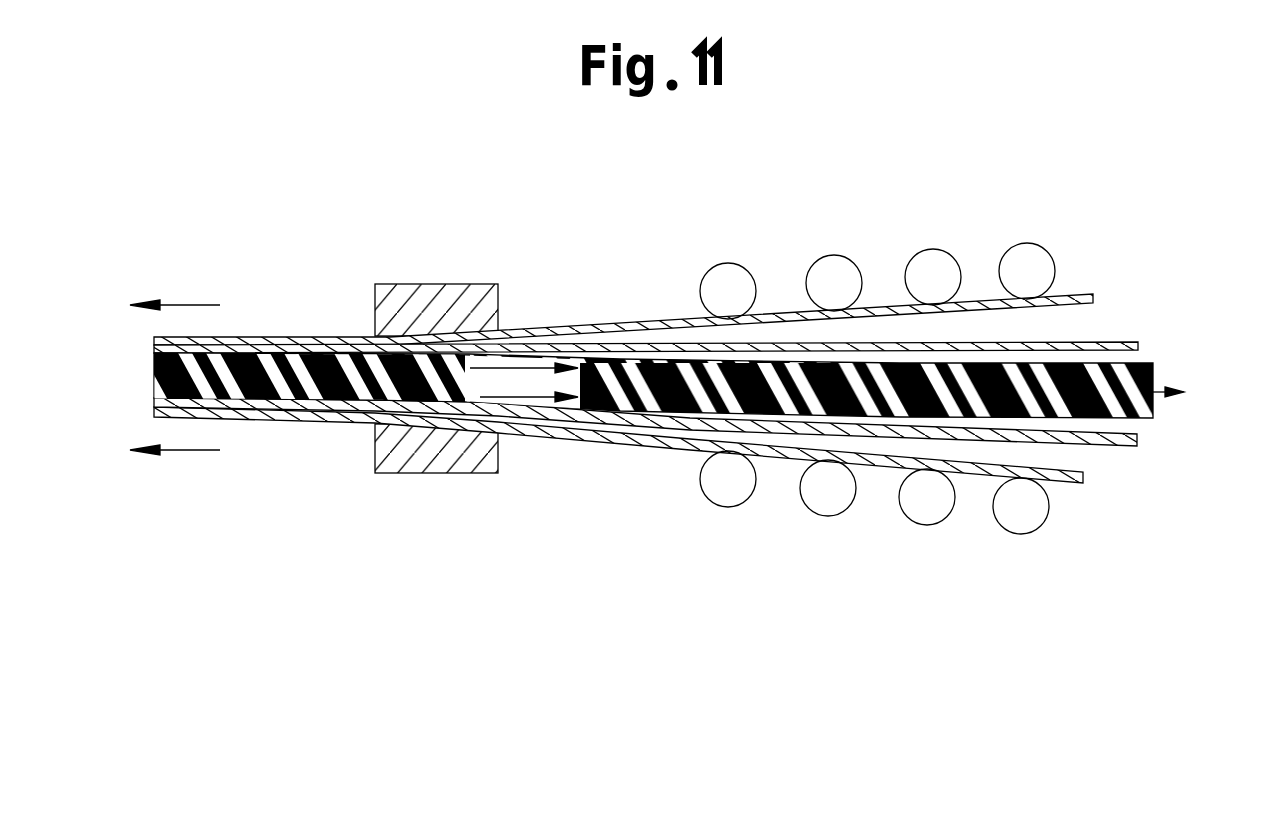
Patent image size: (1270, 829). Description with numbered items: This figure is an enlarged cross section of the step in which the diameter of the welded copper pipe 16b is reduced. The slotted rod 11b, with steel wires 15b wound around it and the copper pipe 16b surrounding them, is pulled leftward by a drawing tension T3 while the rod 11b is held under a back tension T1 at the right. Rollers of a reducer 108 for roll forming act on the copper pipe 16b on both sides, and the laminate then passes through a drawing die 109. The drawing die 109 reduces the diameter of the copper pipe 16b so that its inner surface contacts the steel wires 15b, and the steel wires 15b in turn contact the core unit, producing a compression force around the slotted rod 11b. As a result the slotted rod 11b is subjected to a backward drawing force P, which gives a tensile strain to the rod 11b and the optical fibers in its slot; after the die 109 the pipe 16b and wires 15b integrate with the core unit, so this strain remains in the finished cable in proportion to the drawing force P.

The reducer 108 is at (745, 291).
The drawing die 109 is at (477, 303).
The copper pipe 16b is at (983, 299).
The steel wires 15b is at (1122, 340).
The slotted rod 11b is at (1141, 414).
The drawing force P is at (498, 398).
The back tension T1 is at (1176, 389).
The drawing tension T3 is at (207, 305).